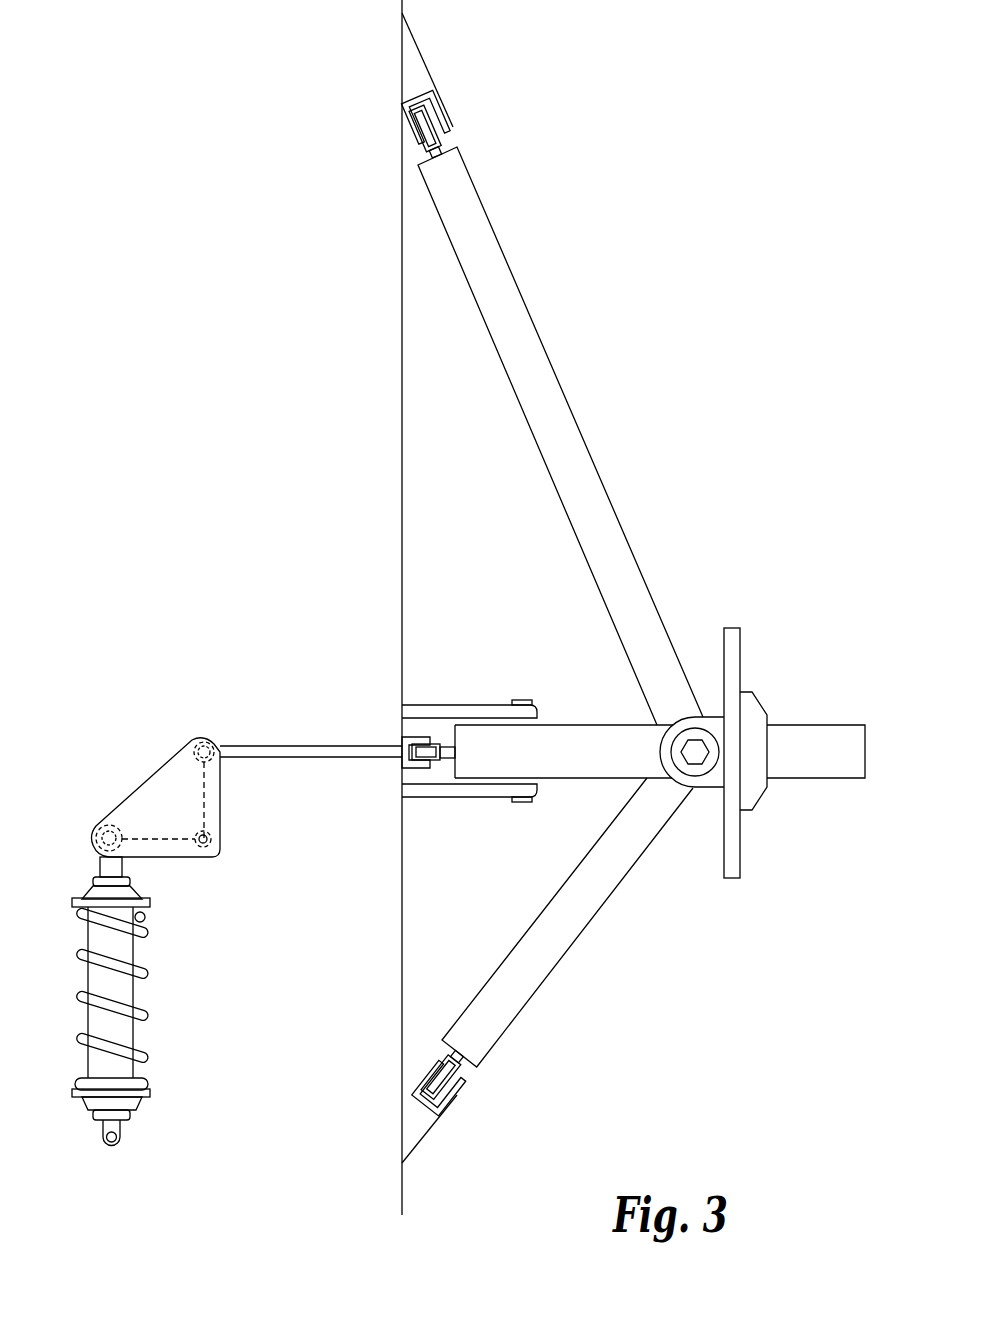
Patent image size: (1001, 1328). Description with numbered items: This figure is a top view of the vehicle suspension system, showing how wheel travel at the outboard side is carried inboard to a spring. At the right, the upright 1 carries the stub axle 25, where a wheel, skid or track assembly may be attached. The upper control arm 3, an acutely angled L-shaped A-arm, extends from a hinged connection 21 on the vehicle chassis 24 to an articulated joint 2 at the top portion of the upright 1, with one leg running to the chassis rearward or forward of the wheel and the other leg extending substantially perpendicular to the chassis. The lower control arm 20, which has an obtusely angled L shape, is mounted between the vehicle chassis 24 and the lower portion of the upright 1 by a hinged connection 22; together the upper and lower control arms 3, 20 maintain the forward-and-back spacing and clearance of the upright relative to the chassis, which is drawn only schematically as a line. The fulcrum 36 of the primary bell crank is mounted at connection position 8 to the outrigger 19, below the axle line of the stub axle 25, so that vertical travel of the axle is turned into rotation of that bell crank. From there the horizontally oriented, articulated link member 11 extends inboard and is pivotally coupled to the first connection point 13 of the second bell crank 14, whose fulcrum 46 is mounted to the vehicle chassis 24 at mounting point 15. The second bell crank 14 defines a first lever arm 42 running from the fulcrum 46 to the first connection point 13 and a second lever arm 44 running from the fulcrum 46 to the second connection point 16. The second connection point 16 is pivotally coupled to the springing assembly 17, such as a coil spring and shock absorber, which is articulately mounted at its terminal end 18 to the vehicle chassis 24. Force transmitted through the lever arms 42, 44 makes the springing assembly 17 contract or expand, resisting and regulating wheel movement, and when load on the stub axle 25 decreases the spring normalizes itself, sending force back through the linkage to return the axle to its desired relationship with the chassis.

The upright 1 is at (712, 715).
The articulated joint 2 is at (709, 787).
The upper control arm 3 is at (613, 481).
The connection position 8 is at (520, 801).
The horizontally oriented link member 11 is at (300, 746).
The first connection point of second bell crank 13 is at (196, 744).
The second bell crank 14 is at (161, 803).
The mounting point 15 is at (211, 845).
The second connection point of second bell crank 16 is at (100, 829).
The springing assembly 17 is at (139, 995).
The terminal end of springing assembly 18 is at (118, 1145).
The outrigger 19 is at (418, 797).
The lower control arm 20 is at (597, 919).
The hinged connection 21 is at (476, 118).
The hinged connection 22 is at (450, 1084).
The vehicle chassis 24 is at (400, 383).
The stub axle 25 is at (855, 783).
The fulcrum of bell crank 36 is at (512, 698).
The first lever arm of second bell crank 42 is at (218, 810).
The second lever arm of second bell crank 44 is at (152, 860).
The fulcrum of second bell crank 46 is at (208, 851).